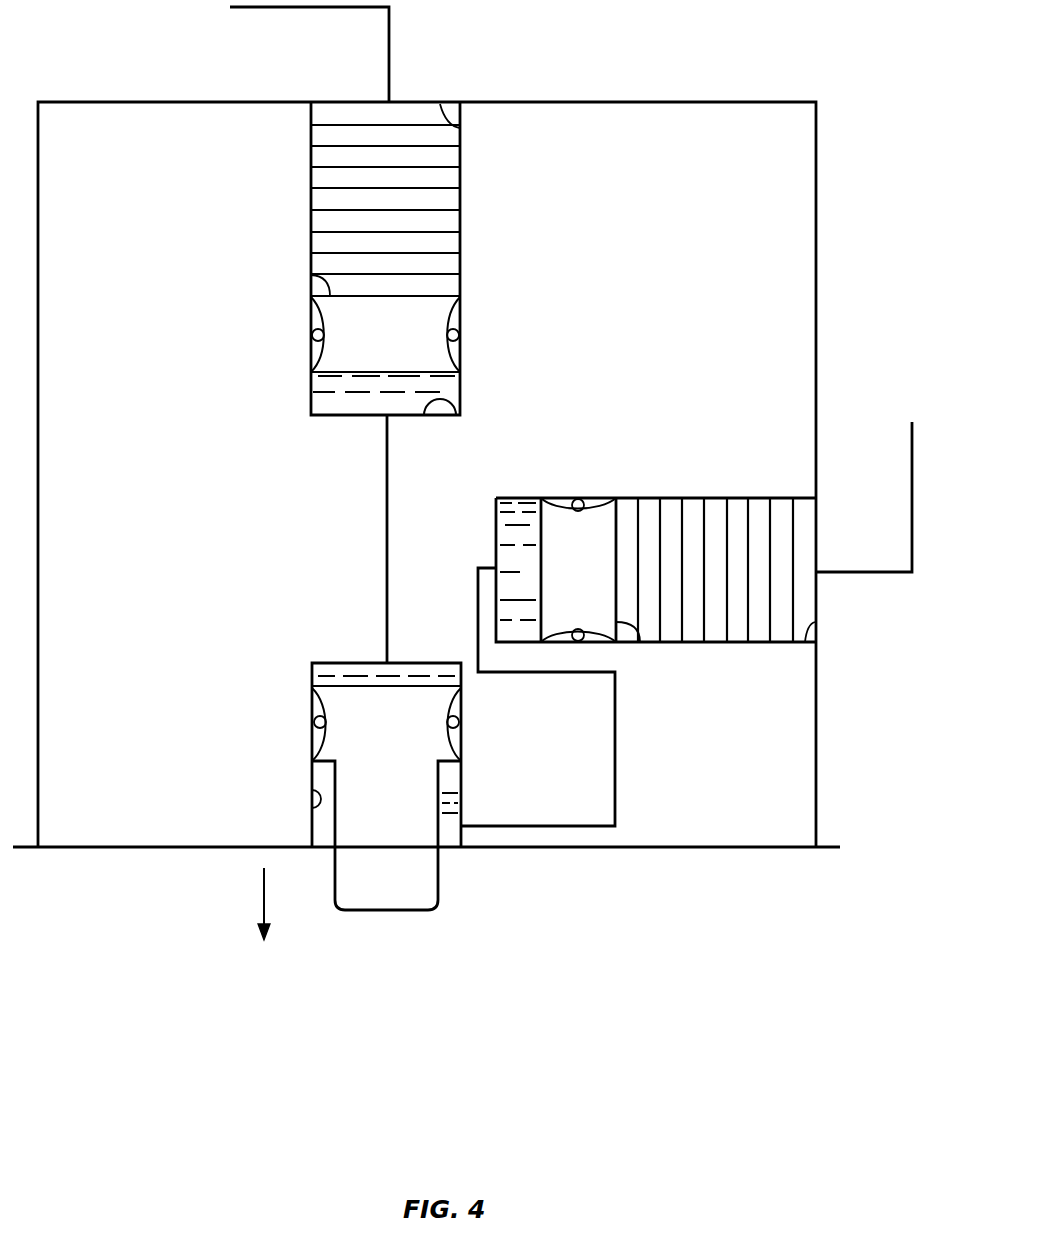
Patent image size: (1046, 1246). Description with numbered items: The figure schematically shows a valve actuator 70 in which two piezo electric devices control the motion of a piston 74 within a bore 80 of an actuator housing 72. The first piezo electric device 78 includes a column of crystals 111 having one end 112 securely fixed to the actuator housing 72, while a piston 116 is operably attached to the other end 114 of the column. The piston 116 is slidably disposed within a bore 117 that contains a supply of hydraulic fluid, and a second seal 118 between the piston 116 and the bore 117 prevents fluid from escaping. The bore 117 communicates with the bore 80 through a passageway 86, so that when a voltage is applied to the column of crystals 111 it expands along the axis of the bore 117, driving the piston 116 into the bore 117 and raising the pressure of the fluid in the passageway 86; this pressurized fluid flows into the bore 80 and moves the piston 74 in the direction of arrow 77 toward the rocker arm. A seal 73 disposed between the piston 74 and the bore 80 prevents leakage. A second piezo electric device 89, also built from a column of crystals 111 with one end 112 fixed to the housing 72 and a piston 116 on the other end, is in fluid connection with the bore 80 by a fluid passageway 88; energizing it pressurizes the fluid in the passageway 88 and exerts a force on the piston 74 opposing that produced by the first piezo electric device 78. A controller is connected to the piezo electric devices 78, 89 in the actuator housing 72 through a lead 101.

The actuator 70 is at (612, 884).
The actuator housing 72 is at (725, 850).
The seal 73 is at (461, 722).
The piston 74 is at (386, 799).
The arrow 77 is at (246, 904).
The piezo electric device 78 is at (462, 238).
The bore 80 is at (312, 792).
The passageway 86 is at (387, 543).
The fluid passageway 88 is at (616, 748).
The second piezo electric device 89 is at (670, 497).
The lead 101 is at (389, 68).
The column of crystals 111 is at (415, 202).
The end 112 is at (460, 128).
The other end 114 is at (311, 275).
The piston 116 is at (463, 469).
The bore 117 is at (455, 415).
The second seal 118 is at (460, 330).